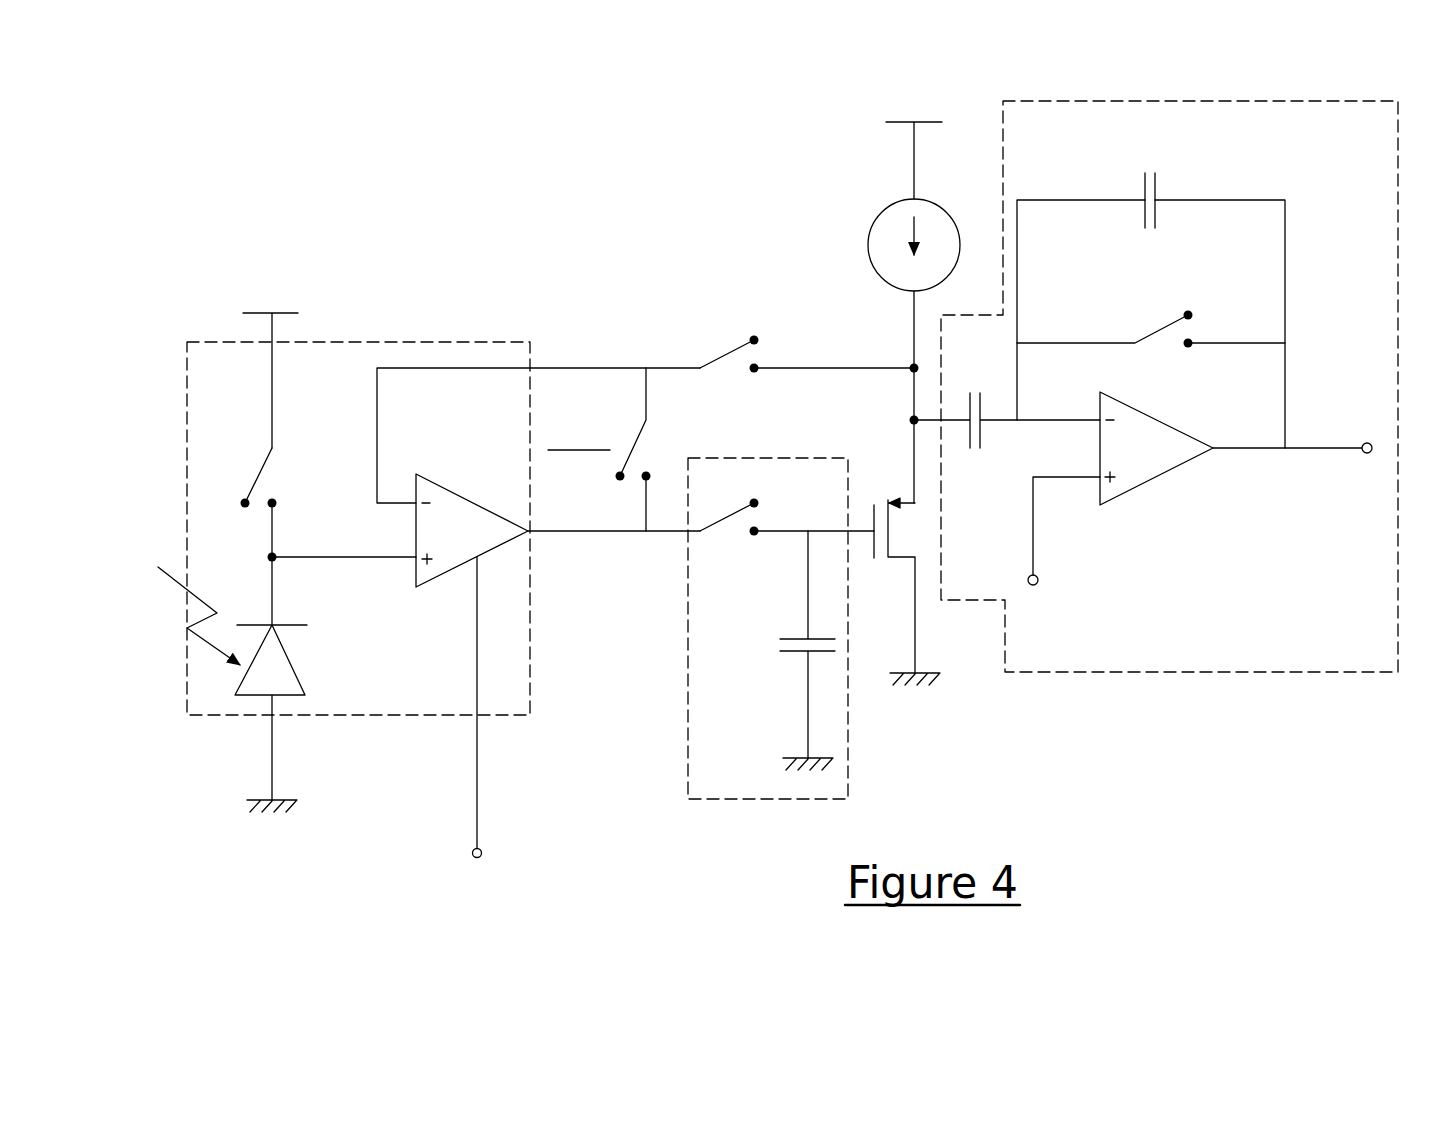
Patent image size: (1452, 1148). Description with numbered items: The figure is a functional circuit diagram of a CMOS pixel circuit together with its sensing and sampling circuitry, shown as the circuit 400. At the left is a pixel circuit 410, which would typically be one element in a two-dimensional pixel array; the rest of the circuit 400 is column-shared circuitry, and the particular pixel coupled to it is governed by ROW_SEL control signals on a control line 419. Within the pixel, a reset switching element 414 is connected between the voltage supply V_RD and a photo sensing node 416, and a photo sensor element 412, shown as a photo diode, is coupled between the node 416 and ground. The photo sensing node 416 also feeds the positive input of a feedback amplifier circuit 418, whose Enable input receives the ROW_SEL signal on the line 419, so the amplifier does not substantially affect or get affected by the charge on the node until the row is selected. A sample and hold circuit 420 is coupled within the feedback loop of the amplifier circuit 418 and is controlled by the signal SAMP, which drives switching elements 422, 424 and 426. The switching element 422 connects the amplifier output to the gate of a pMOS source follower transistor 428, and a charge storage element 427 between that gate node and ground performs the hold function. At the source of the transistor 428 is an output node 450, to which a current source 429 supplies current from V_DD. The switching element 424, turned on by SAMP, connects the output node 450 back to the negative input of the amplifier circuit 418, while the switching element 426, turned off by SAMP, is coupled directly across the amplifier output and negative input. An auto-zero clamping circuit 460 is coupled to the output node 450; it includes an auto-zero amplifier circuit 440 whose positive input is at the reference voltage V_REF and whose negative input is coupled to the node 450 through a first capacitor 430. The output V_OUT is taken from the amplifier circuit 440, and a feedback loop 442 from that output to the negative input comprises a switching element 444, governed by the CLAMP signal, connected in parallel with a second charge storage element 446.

The circuit 400 is at (382, 130).
The pixel circuit 410 is at (350, 342).
The photo sensor element 412 is at (287, 673).
The reset switching element 414 is at (242, 453).
The photo sensing node 416 is at (273, 560).
The feedback amplifier circuit 418 is at (468, 513).
The control line 419 is at (477, 788).
The sample and hold circuit 420 is at (737, 795).
The switching element 422 is at (722, 548).
The switching element 424 is at (720, 298).
The switching element 426 is at (652, 453).
The charge storage element 427 is at (790, 662).
The pMOS source follower transistor 428 is at (868, 490).
The current source 429 is at (890, 225).
The capacitor 430 is at (976, 462).
The auto-zero amplifier circuit 440 is at (1143, 472).
The feedback loop 442 is at (1318, 282).
The switching element 444 is at (1160, 346).
The charge storage element 446 is at (1172, 172).
The output node 450 is at (910, 366).
The auto-zero clamping circuit 460 is at (1173, 657).